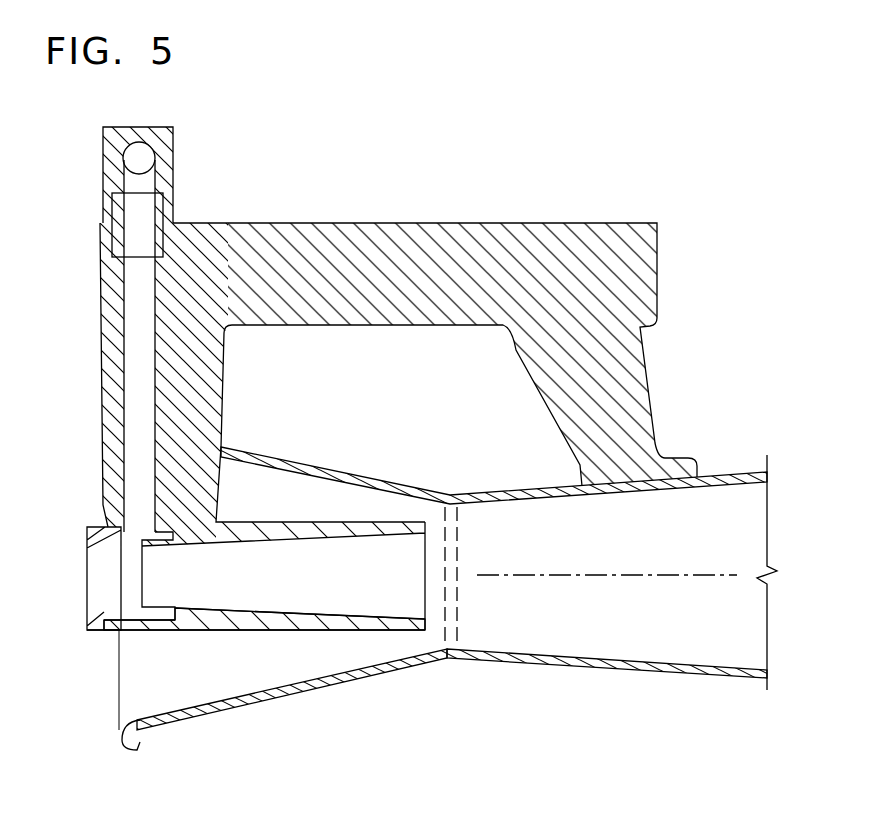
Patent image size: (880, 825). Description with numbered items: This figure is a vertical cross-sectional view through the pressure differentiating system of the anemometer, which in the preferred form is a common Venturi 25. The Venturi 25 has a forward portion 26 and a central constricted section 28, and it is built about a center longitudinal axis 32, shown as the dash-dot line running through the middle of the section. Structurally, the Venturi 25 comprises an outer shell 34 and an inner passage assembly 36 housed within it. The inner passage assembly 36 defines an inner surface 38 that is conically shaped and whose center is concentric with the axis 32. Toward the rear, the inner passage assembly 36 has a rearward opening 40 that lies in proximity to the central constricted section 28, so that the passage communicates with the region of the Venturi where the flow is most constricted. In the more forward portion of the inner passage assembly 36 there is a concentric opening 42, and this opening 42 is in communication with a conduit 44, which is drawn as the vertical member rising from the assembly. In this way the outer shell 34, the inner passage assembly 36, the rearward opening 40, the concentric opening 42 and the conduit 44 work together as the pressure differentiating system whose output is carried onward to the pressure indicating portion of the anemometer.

The Venturi 25 is at (628, 660).
The forward portion 26 is at (120, 730).
The central constricted section 28 is at (453, 657).
The center longitudinal axis 32 is at (712, 575).
The outer shell 34 is at (290, 688).
The inner passage assembly 36 is at (205, 618).
The inner surface 38 is at (190, 547).
The rearward opening 40 is at (417, 560).
The concentric opening 42 is at (130, 564).
The conduit 44 is at (137, 346).